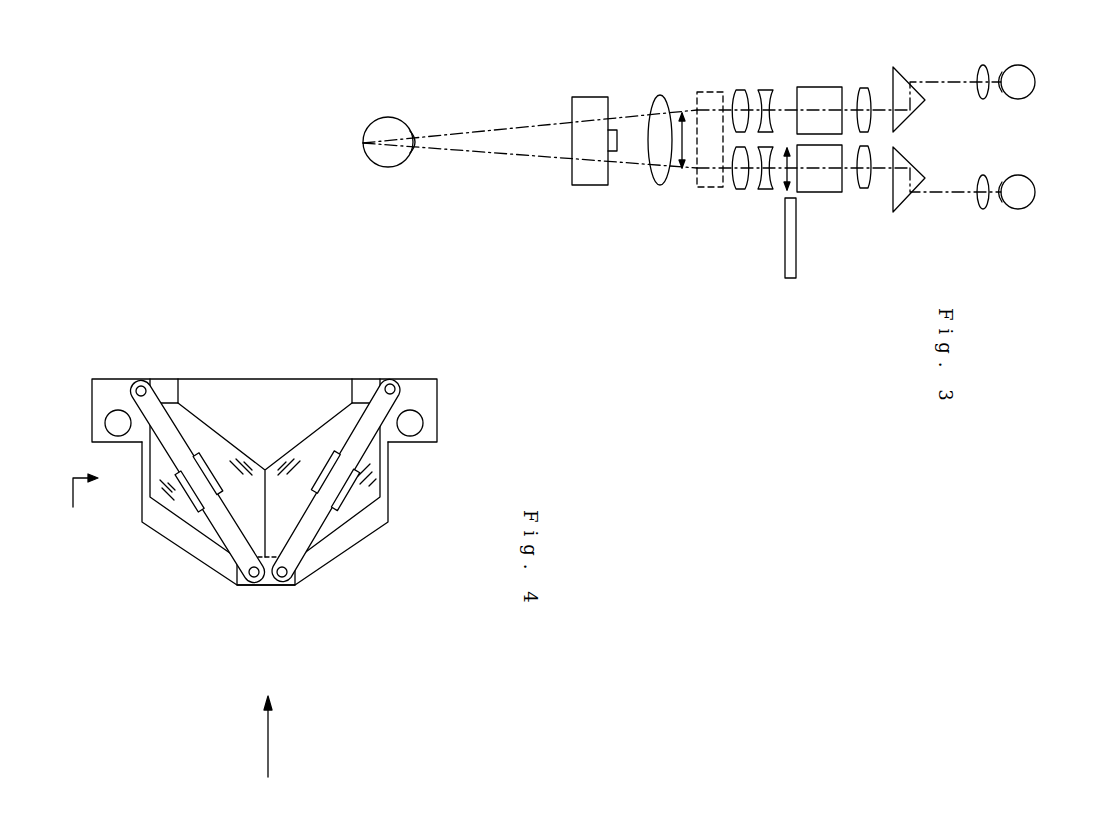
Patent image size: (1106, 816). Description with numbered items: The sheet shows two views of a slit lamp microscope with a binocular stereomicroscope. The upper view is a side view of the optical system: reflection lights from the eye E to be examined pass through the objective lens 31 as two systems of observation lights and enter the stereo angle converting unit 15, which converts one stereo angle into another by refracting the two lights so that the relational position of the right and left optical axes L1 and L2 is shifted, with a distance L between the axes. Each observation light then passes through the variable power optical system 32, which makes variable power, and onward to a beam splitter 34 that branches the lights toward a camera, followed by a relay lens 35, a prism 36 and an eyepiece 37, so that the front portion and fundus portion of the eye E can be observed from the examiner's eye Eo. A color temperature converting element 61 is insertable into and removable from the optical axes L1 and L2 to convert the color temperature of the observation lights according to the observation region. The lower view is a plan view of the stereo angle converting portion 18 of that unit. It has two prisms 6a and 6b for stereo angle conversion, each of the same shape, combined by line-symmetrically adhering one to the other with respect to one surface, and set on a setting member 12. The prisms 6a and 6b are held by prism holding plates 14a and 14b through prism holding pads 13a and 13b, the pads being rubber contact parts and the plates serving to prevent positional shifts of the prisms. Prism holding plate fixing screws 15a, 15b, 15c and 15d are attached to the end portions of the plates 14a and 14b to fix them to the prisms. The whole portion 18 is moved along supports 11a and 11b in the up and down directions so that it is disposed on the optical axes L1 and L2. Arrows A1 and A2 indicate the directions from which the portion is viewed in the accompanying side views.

In FIG. 3, the eye to be examined E is at (387, 117).
In FIG. 3, the examiner's eye Eo is at (1035, 82).
In FIG. 3, the right optical axis L1 is at (527, 121).
In FIG. 3, the left optical axis L2 is at (508, 161).
In FIG. 3, the distance between the optical axes L is at (688, 140).
In FIG. 3, the setting member 12 is at (593, 186).
In FIG. 3, the objective lens 31 is at (660, 186).
In FIG. 3, the stereo angle converting unit 15 is at (711, 188).
In FIG. 3, the variable power optical system 32 is at (752, 90).
In FIG. 3, the beam splitter 34 is at (813, 87).
In FIG. 3, the relay lens 35 is at (863, 88).
In FIG. 3, the prism 36 is at (906, 78).
In FIG. 3, the eyepiece 37 is at (983, 65).
In FIG. 3, the color temperature converting element 61 is at (785, 245).
In FIG. 4, the stereo angle converting portion 18 is at (341, 358).
In FIG. 4, the support 11a is at (420, 432).
In FIG. 4, the support 11b is at (105, 423).
In FIG. 4, the prism for stereo angle conversion 6a is at (372, 461).
In FIG. 4, the prism for stereo angle conversion 6b is at (172, 503).
In FIG. 4, the prism holding pad 13a is at (350, 500).
In FIG. 4, the prism holding pad 13b is at (190, 512).
In FIG. 4, the prism holding plate 14a is at (312, 533).
In FIG. 4, the prism holding plate 14b is at (235, 542).
In FIG. 4, the prism holding plate fixing screw 15a is at (290, 586).
In FIG. 4, the prism holding plate fixing screw 15b is at (393, 378).
In FIG. 4, the prism holding plate fixing screw 15c is at (262, 586).
In FIG. 4, the prism holding plate fixing screw 15d is at (153, 378).
In FIG. 4, the arrow A1 is at (81, 504).
In FIG. 4, the arrow A2 is at (270, 737).